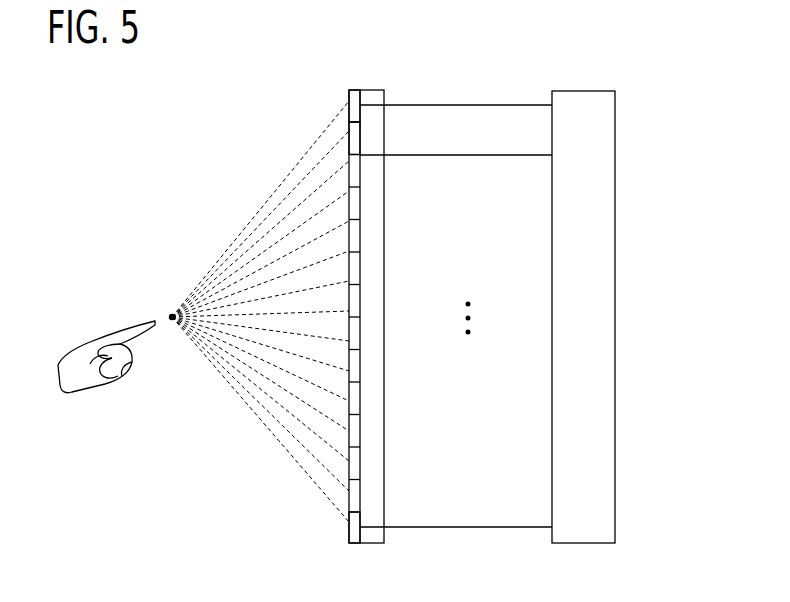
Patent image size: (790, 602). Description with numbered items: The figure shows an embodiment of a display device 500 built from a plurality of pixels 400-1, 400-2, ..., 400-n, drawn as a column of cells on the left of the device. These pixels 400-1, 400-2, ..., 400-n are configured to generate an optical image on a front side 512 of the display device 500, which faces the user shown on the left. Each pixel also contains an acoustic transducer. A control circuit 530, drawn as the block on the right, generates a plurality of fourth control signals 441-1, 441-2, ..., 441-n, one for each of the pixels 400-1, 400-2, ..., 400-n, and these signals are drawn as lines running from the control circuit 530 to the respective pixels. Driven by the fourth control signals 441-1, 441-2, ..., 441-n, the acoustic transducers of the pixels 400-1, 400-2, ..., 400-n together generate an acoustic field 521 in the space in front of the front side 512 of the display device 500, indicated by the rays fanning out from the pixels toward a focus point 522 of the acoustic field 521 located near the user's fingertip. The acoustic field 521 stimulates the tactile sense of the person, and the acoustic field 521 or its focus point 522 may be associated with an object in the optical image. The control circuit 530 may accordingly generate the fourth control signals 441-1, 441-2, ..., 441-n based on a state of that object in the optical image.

The pixel 400-1 is at (349, 100).
The pixel 400-2 is at (349, 136).
The pixel 400-n is at (349, 531).
The fourth control signal 441-1 is at (466, 105).
The fourth control signal 441-2 is at (468, 157).
The fourth control signal 441-n is at (467, 527).
The control circuit 530 is at (615, 319).
The front side 512 is at (250, 178).
The focus point 522 is at (168, 314).
The acoustic field 521 is at (173, 352).
The display device 500 is at (130, 524).